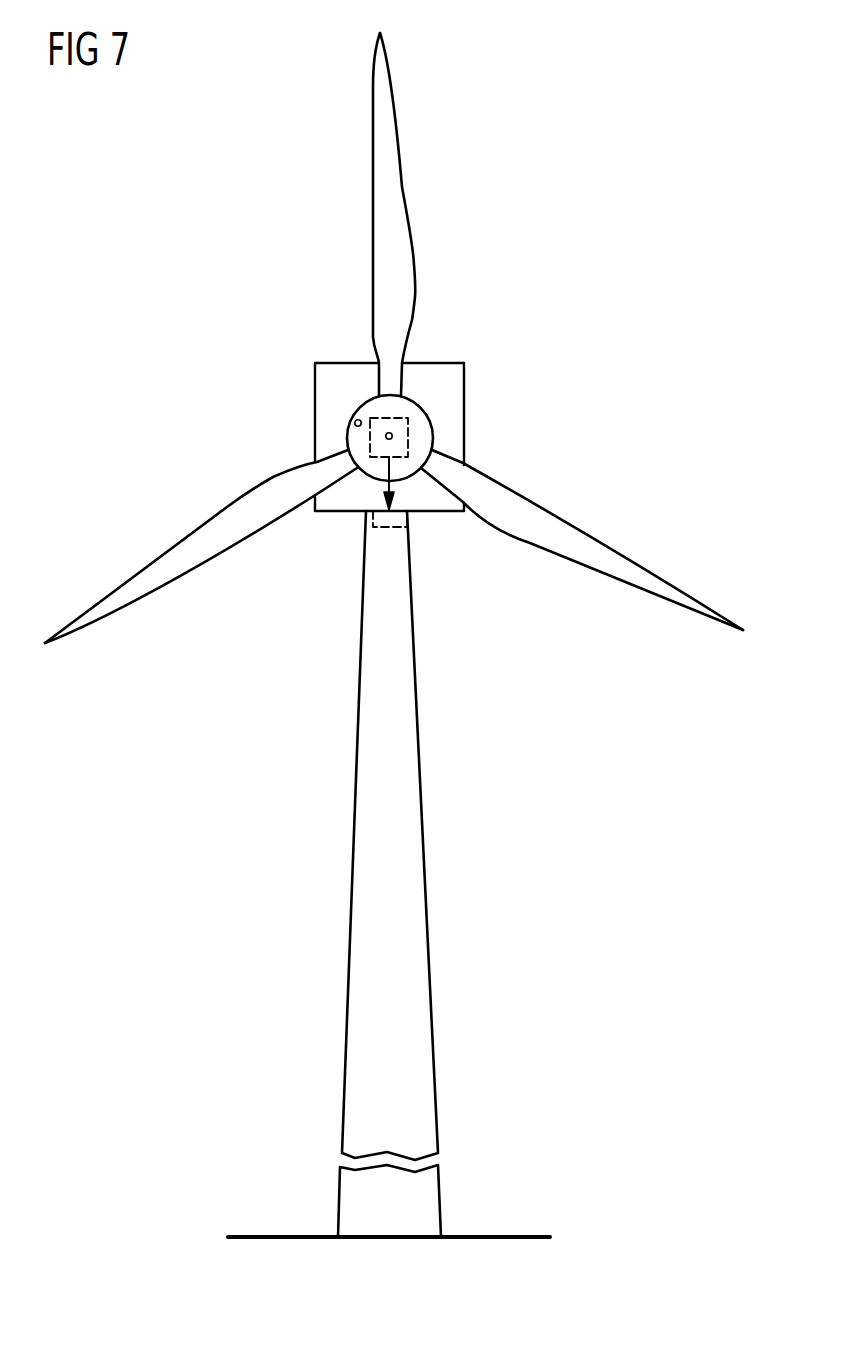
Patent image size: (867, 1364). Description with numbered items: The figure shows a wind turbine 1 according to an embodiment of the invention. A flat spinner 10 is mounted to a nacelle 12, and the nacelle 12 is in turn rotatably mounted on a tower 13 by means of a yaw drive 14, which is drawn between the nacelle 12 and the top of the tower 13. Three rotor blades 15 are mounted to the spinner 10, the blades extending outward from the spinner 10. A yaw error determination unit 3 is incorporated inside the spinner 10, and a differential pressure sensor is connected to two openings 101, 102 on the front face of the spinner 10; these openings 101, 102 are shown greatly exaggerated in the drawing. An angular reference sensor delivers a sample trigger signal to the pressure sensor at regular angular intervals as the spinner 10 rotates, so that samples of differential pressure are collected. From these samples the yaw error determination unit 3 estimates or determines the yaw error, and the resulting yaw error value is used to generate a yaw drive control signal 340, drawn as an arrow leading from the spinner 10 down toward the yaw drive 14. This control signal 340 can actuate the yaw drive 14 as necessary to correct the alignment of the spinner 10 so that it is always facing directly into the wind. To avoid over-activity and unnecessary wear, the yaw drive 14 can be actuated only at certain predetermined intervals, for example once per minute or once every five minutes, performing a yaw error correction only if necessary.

The wind turbine 1 is at (582, 225).
The yaw error determination unit 3 is at (408, 438).
The flat spinner 10 is at (364, 397).
The nacelle 12 is at (453, 395).
The tower 13 is at (412, 820).
The yaw drive 14 is at (392, 522).
The rotor blades 15 is at (400, 253).
The opening 101 is at (391, 433).
The opening 102 is at (354, 423).
The yaw drive control signal 340 is at (386, 474).